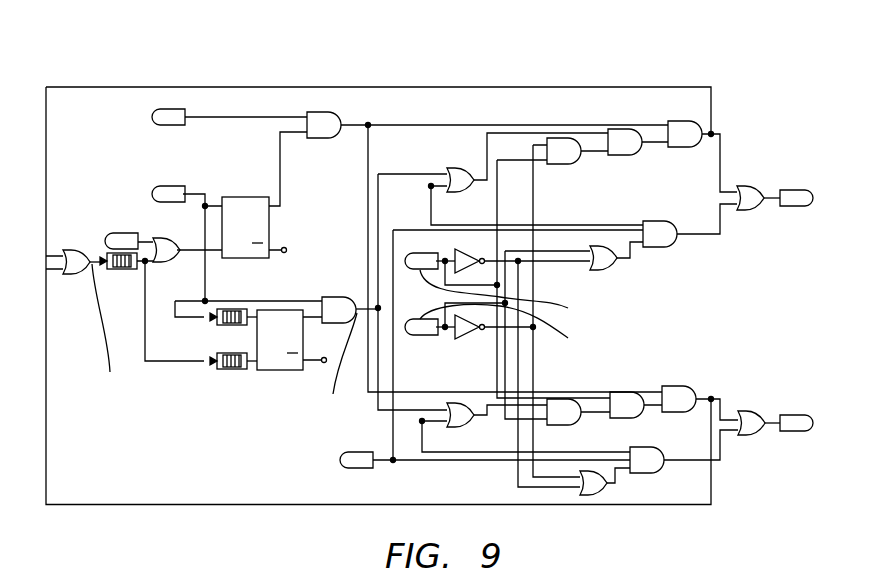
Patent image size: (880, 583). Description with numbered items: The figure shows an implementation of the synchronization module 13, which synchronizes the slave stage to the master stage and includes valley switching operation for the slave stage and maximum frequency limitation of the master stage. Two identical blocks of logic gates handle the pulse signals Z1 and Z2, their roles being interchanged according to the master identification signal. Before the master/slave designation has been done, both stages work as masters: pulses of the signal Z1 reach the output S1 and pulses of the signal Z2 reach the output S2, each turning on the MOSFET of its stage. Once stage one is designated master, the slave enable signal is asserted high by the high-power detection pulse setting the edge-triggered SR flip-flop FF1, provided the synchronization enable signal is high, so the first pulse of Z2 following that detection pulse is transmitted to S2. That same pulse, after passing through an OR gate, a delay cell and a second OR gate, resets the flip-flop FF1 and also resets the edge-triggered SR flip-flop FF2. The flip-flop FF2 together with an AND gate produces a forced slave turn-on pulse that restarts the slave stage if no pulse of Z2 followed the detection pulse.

The synchronization module 13 is at (429, 256).
The S1 output signal S1 is at (797, 192).
The S2 output signal S2 is at (797, 417).
The Z1 signal Z1 is at (510, 292).
The Z2 signal Z2 is at (512, 436).
The edge-triggered SR flip-flop FF1 is at (245, 240).
The edge-triggered SR flip-flop FF2 is at (280, 352).